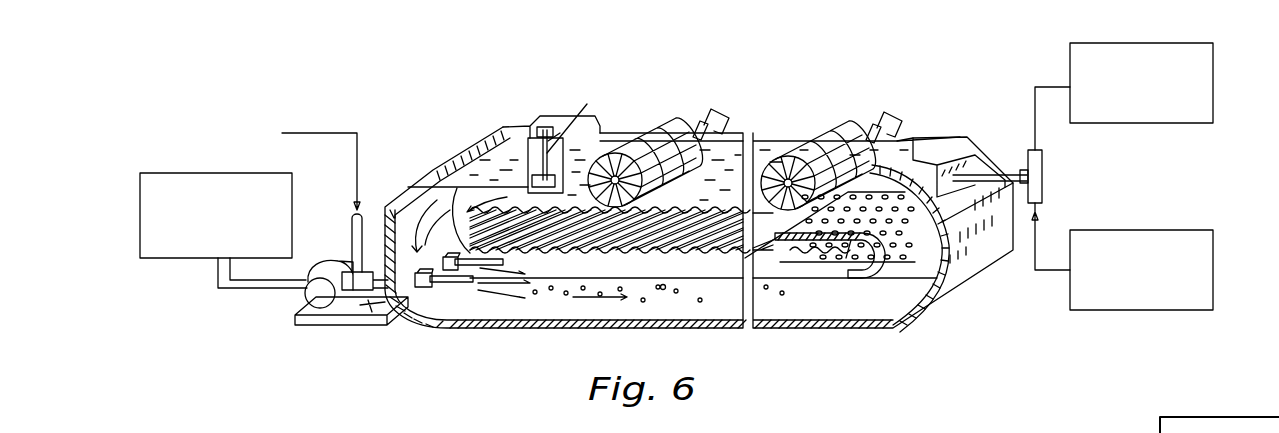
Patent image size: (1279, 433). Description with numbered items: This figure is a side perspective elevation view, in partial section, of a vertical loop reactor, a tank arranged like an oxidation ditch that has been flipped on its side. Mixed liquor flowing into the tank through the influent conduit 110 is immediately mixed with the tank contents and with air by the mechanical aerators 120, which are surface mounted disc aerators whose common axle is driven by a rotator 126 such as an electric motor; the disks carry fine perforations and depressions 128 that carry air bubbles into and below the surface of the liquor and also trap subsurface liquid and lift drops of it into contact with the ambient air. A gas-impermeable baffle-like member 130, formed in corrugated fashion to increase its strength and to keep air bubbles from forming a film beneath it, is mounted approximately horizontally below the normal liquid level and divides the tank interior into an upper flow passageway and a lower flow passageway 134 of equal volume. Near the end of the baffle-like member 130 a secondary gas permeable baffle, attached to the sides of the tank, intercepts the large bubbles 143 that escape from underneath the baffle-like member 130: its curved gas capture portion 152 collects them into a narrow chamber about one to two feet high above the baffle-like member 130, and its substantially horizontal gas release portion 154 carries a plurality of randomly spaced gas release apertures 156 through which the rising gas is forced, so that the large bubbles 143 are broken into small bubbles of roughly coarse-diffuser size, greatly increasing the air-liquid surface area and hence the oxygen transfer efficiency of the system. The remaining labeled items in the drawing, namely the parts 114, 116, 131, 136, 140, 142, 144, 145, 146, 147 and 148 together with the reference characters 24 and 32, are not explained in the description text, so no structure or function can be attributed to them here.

The influent conduit 110 is at (489, 339).
The raw sewage supply 114 is at (1200, 277).
The return sludge addition 116 is at (1200, 88).
The mechanical aerators 120 is at (678, 103).
The rotator 126 is at (728, 110).
The perforations and depressions 128 is at (789, 155).
The baffle-like member 130 is at (658, 301).
The tank wall 131 is at (418, 182).
The lower flow passageway 134 is at (627, 276).
The recirculation zone 136 is at (578, 102).
The housing 140 is at (542, 127).
The rod 142 is at (490, 165).
The large bubbles 143 is at (664, 285).
The base plate 144 is at (357, 325).
The pump 145 is at (305, 325).
The air pipe 146 is at (350, 226).
The return sludge pipe 147 is at (272, 292).
The nozzles 148 is at (440, 292).
The curved gas capture portion 152 is at (915, 265).
The gas release portion 154 is at (830, 271).
The gas release apertures 156 is at (825, 259).
The flow direction 24 is at (735, 201).
The flow direction 32 is at (585, 209).